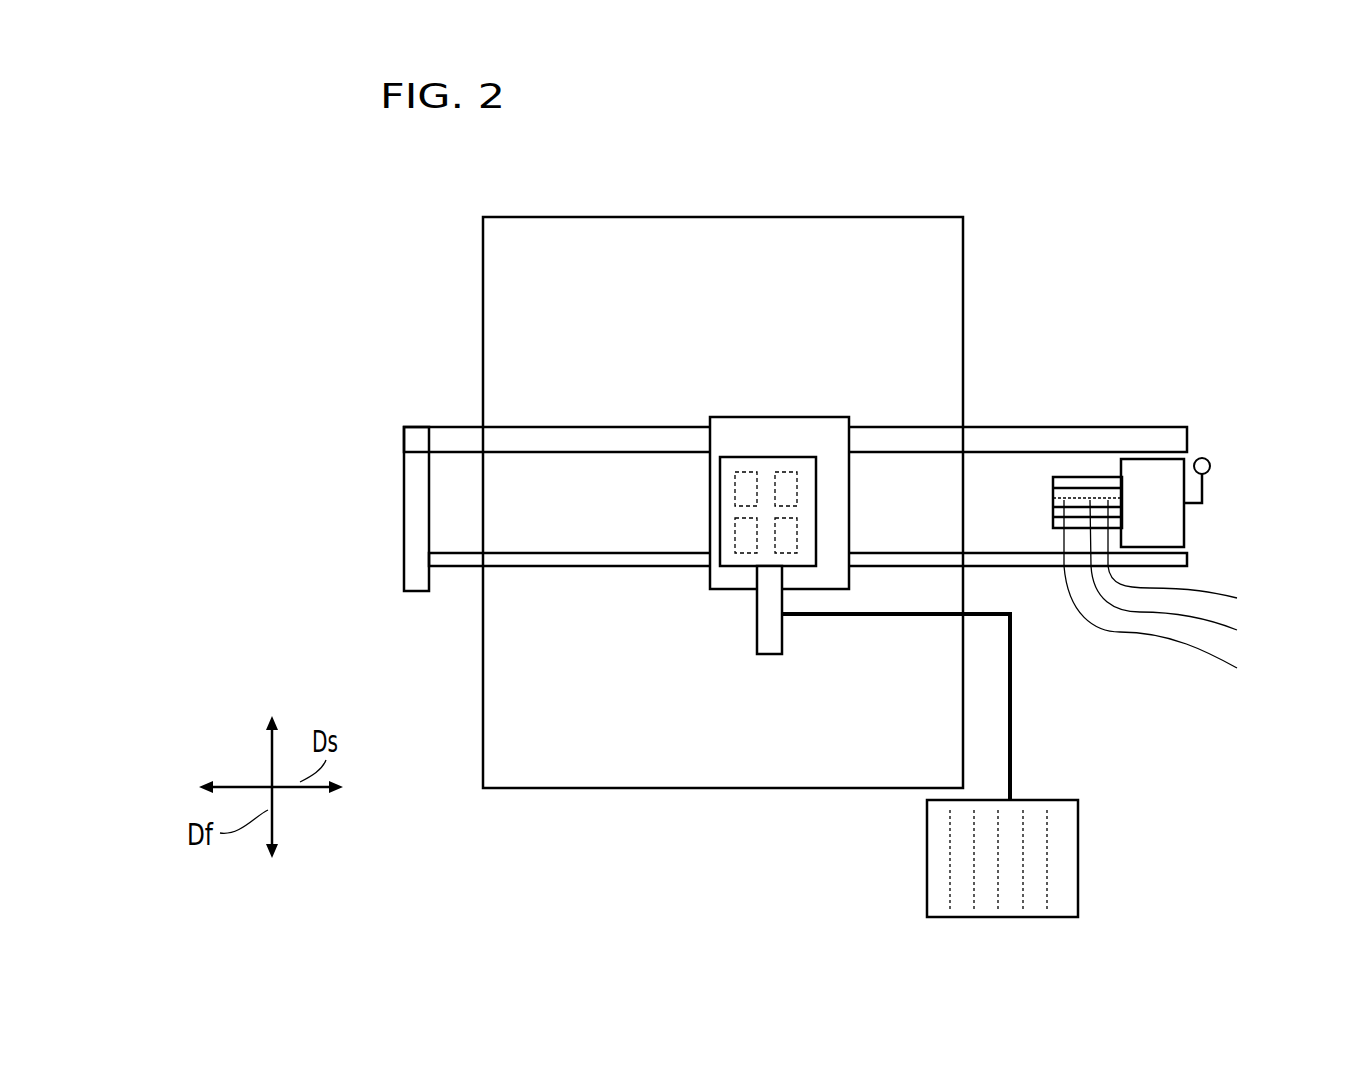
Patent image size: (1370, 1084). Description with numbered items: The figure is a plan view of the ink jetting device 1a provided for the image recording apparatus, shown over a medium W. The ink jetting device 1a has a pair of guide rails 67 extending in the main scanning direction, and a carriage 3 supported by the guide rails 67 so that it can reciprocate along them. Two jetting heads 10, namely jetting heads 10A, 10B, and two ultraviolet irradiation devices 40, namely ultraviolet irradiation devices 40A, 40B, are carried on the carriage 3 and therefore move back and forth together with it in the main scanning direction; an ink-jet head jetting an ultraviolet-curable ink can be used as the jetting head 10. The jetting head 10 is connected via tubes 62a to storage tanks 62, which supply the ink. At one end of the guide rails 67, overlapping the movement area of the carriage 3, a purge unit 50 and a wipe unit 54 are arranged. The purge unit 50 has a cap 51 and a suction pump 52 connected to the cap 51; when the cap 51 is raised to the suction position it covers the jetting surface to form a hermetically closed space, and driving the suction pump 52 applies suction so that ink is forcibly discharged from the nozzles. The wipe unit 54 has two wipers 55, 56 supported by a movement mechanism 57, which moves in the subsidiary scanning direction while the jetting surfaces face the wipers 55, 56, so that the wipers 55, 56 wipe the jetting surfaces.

The ink jetting device 1a is at (750, 209).
The medium W is at (930, 264).
The guide rails 67 is at (418, 443).
The carriage 3 is at (720, 438).
The jetting head 10 is at (701, 511).
The jetting head 10A is at (740, 452).
The jetting head 10B is at (746, 554).
The ultraviolet irradiation device 40 is at (855, 441).
The ultraviolet irradiation device 40A is at (790, 455).
The ultraviolet irradiation device 40B is at (798, 533).
The purge unit 50 is at (1270, 445).
The cap 51 is at (1168, 524).
The suction pump 52 is at (1212, 466).
The wipe unit 54 is at (1270, 575).
The wiper 55 is at (1167, 596).
The wiper 56 is at (1180, 576).
The movement mechanism 57 is at (1189, 558).
The storage tanks 62 is at (1057, 850).
The tubes 62a is at (1013, 720).